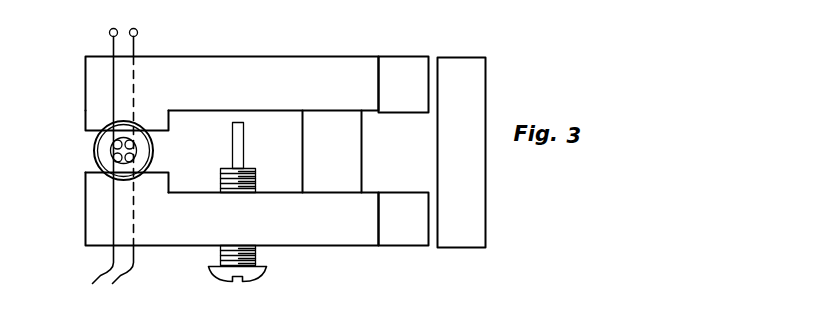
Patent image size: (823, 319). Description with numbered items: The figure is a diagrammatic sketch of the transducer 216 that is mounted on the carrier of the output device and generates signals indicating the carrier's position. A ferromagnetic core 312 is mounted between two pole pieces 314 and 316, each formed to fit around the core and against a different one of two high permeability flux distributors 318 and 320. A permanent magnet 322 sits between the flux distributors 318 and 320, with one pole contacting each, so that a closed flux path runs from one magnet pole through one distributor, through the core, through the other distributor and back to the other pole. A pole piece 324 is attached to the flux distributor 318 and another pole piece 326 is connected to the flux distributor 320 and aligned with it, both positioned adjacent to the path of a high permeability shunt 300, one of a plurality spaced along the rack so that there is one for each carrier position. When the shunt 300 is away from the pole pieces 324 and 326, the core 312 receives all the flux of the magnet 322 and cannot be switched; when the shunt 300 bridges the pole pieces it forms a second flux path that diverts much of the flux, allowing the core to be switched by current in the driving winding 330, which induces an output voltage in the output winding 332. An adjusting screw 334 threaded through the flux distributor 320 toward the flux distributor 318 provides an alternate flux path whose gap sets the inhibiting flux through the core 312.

The transducer 216 is at (305, 55).
The high permeability shunt 300 is at (466, 67).
The ferromagnetic core 312 is at (152, 150).
The pole piece 314 is at (148, 115).
The pole piece 316 is at (150, 186).
The flux distributor 318 is at (213, 68).
The flux distributor 320 is at (202, 241).
The permanent magnet 322 is at (354, 156).
The pole piece 324 is at (391, 60).
The pole piece 326 is at (403, 238).
The driving winding 330 is at (101, 273).
The output winding 332 is at (138, 34).
The adjusting screw 334 is at (261, 270).